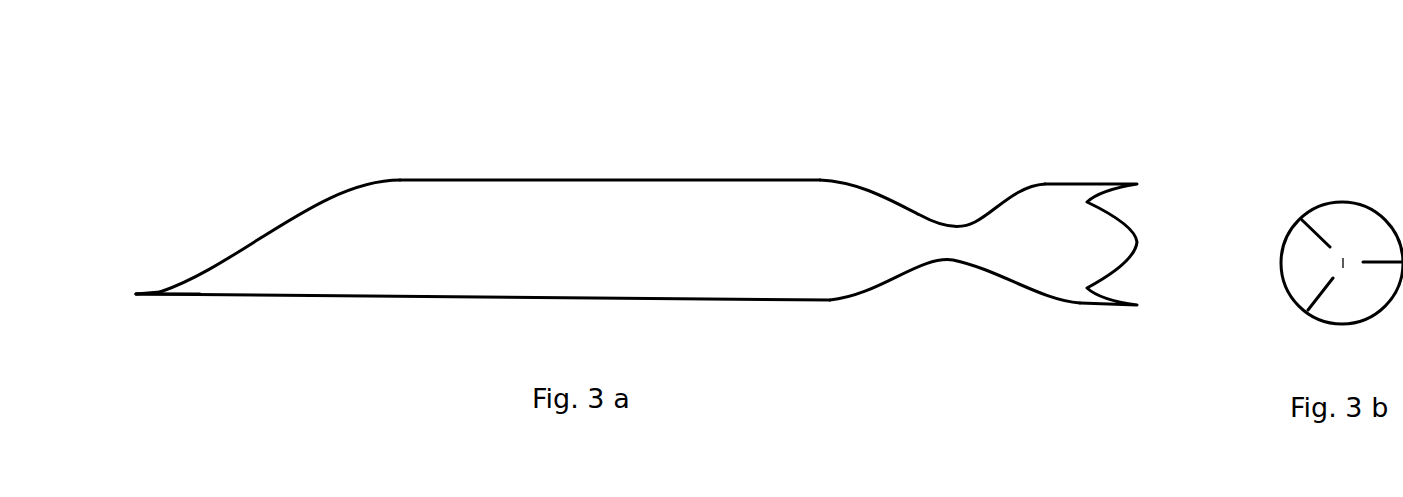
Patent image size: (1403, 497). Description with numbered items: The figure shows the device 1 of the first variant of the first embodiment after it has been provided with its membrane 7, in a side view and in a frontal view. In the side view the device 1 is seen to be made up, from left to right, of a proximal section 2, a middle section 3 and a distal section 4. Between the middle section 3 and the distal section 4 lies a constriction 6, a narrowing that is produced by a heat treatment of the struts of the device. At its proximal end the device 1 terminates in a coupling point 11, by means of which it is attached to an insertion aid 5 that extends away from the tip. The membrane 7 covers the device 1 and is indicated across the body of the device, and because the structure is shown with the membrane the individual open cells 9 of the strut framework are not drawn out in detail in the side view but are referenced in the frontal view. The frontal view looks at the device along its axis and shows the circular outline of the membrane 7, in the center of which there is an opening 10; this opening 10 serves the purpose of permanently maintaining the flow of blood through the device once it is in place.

In FIG. 3a, the device 1 is at (627, 150).
In FIG. 3a, the proximal section 2 is at (243, 215).
In FIG. 3a, the middle section 3 is at (657, 317).
In FIG. 3a, the distal section 4 is at (1070, 163).
In FIG. 3a, the insertion aid 5 is at (157, 300).
In FIG. 3a, the constriction 6 is at (957, 207).
In FIG. 3a, the membrane 7 is at (1033, 260).
In FIG. 3b, the membrane 7 is at (1349, 218).
In FIG. 3b, the open cells 9 is at (1285, 227).
In FIG. 3b, the opening 10 is at (1345, 262).
In FIG. 3a, the coupling point 11 is at (167, 283).